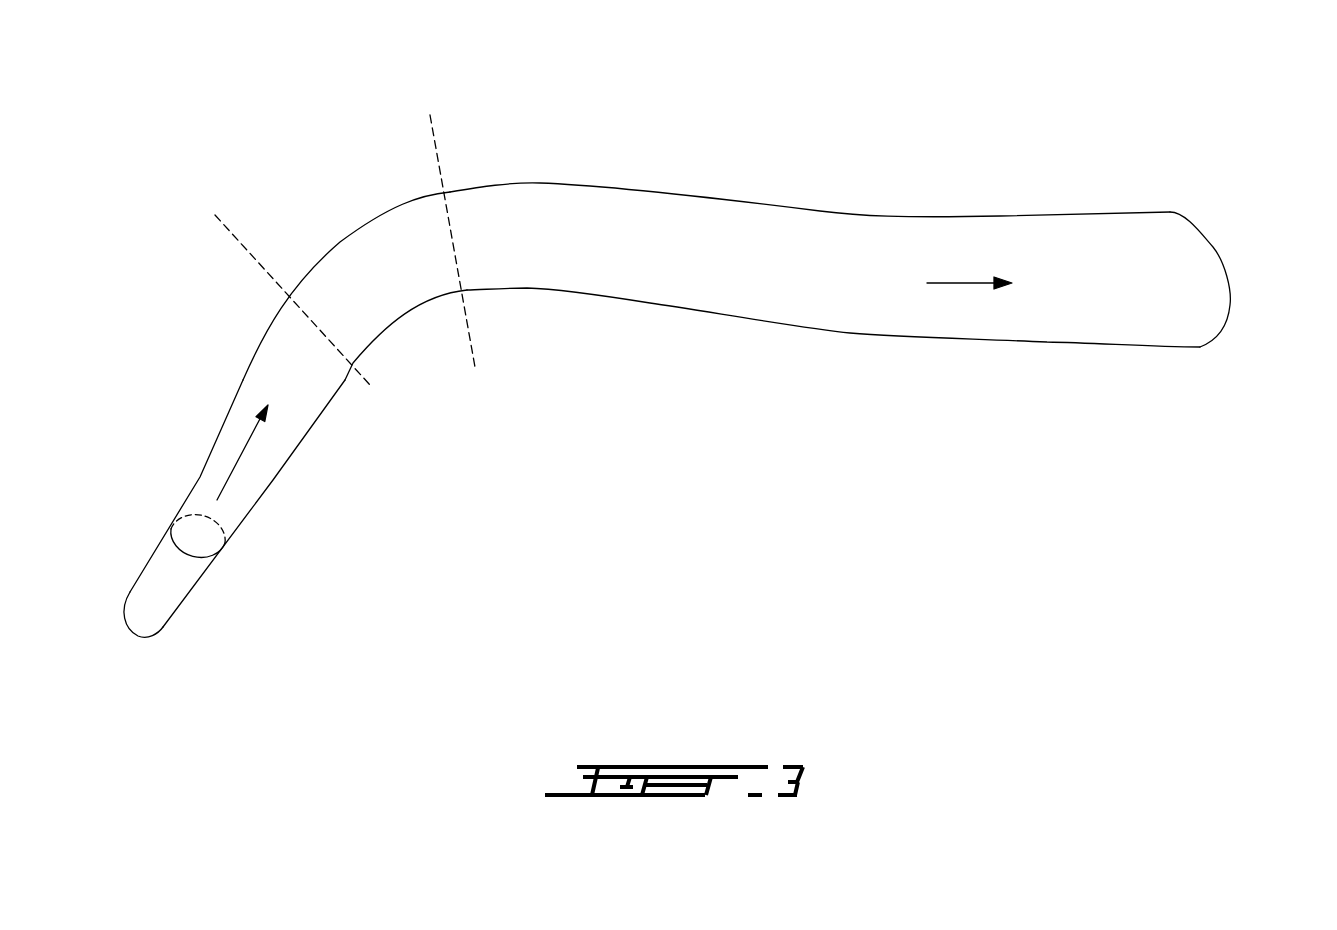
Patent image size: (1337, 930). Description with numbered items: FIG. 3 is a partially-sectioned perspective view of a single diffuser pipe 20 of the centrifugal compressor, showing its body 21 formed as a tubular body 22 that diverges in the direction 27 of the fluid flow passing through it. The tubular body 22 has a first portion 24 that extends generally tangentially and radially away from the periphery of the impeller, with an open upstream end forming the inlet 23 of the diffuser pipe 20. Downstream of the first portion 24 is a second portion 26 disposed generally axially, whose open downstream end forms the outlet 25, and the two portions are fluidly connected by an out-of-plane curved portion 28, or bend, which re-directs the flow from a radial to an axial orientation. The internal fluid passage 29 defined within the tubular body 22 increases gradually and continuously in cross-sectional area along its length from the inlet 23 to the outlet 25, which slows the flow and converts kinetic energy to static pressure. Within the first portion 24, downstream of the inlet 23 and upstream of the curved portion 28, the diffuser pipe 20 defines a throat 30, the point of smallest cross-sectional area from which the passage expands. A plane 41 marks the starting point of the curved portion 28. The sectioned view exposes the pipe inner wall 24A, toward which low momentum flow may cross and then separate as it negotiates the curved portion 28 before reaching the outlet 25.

The diffuser pipe 20 is at (835, 165).
The body 21 is at (603, 230).
The tubular body 22 is at (528, 182).
The inlet 23 is at (136, 637).
The first portion 24 is at (272, 455).
The pipe inner wall 24A is at (330, 400).
The outlet 25 is at (1230, 326).
The second portion 26 is at (787, 306).
The direction of fluid flow 27 is at (955, 282).
The curved portion 28 is at (342, 247).
The internal fluid passage 29 is at (704, 258).
The throat 30 is at (180, 556).
The plane 41 is at (210, 215).